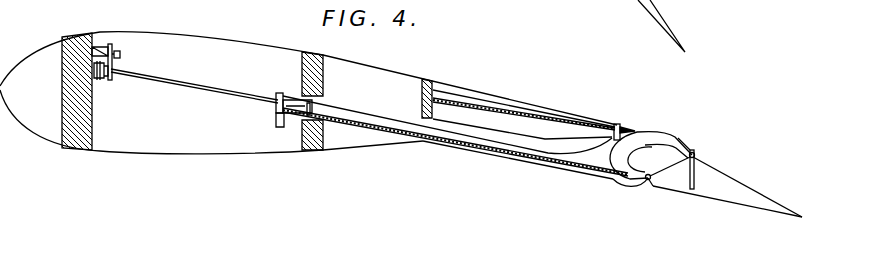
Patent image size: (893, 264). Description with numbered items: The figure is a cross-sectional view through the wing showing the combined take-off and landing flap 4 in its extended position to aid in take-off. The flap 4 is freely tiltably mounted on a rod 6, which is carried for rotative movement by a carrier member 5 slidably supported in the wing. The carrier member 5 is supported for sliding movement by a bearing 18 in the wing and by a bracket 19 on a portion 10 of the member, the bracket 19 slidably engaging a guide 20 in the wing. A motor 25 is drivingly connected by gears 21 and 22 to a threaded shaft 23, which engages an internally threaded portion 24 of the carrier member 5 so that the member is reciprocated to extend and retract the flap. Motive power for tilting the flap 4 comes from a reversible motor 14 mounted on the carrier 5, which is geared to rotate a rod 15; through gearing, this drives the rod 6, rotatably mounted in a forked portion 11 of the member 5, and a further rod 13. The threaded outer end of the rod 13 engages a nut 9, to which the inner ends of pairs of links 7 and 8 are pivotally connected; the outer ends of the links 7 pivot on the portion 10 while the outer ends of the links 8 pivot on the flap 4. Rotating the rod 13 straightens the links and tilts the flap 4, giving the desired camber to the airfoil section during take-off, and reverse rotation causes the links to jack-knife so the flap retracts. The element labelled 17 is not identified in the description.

The combined take-off and landing flap 4 is at (634, 1).
The carrier member 5 is at (552, 164).
The rod 6 is at (646, 181).
The links 7 is at (684, 144).
The links 8 is at (696, 168).
The nut 9 is at (695, 154).
The portion of member 5 10 is at (656, 133).
The forked portion 11 is at (618, 182).
The rod 13 is at (668, 179).
The motor 14 is at (274, 114).
The rod 15 is at (378, 112).
The adjusting knob 17 is at (119, 58).
The bearing 18 is at (300, 92).
The bracket 19 is at (619, 126).
The guide 20 is at (480, 104).
The gear 21 is at (112, 46).
The gear 22 is at (107, 80).
The threaded shaft 23 is at (209, 92).
The internally threaded portion 24 is at (278, 97).
The motor 25 is at (106, 46).